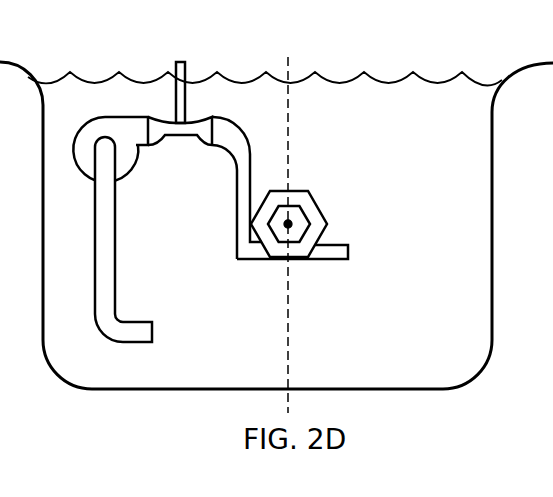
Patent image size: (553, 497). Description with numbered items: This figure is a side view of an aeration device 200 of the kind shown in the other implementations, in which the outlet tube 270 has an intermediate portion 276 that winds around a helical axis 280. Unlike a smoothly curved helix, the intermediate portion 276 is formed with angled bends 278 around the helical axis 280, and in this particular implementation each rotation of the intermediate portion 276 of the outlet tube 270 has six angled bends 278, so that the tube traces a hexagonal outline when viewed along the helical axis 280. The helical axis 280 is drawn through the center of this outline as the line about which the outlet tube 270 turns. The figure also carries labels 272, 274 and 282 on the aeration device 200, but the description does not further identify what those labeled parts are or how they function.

The fluid treatment assembly 200 is at (270, 187).
The outlet tube 270 is at (224, 186).
The valve 272 is at (213, 126).
The mounting tab 274 is at (350, 252).
The intermediate portion 276 is at (321, 238).
The angled bends 278 is at (268, 190).
The helical axis 280 is at (287, 228).
The centerline axis 282 is at (289, 63).